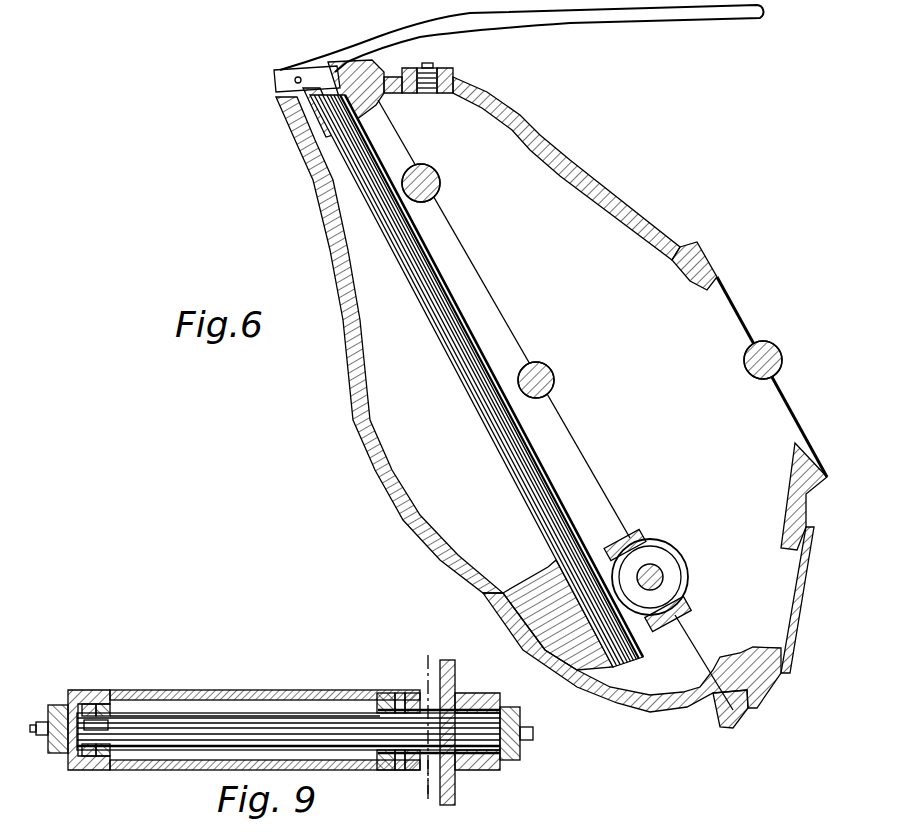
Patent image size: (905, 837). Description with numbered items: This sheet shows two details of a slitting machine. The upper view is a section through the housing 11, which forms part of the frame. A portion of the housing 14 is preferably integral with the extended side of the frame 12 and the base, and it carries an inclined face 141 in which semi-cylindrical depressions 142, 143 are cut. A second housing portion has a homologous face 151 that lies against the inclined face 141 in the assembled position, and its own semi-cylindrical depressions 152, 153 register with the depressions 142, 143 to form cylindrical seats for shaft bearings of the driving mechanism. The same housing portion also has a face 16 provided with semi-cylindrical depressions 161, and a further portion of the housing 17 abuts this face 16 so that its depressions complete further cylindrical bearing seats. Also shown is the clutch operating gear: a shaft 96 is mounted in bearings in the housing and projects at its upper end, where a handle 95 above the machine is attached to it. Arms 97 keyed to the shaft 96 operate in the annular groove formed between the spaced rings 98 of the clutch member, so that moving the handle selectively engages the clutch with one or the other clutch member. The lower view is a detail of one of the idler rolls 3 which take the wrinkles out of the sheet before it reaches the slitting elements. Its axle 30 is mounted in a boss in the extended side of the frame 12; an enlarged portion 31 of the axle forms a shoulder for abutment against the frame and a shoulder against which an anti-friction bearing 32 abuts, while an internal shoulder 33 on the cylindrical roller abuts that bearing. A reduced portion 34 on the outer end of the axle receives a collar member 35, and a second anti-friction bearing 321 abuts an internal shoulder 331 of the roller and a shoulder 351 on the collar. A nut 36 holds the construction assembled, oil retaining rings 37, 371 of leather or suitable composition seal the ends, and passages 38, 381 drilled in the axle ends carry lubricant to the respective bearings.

In FIG. 6, the handle 95 is at (607, 15).
In FIG. 6, the inclined face 141 is at (350, 78).
In FIG. 6, the face on portion 15 151 is at (381, 98).
In FIG. 6, the portion of the housing 14 is at (387, 382).
In FIG. 6, the housing 11 is at (553, 197).
In FIG. 6, the semi-cylindrical depression 142 is at (455, 184).
In FIG. 6, the semi-cylindrical depression 152 is at (440, 192).
In FIG. 6, the semi-cylindrical depression 143 is at (571, 366).
In FIG. 6, the semi-cylindrical depression 153 is at (554, 386).
In FIG. 6, the portion of the housing 17 is at (647, 270).
In FIG. 6, the face on housing 15 16 is at (718, 276).
In FIG. 6, the semi-cylindrical depressions 161 is at (777, 350).
In FIG. 6, the shaft 96 is at (520, 492).
In FIG. 6, the arms 97 is at (633, 534).
In FIG. 6, the rings of the clutch member 98 is at (686, 567).
In FIG. 9, the idler rolls 3 is at (270, 690).
In FIG. 9, the axle 30 is at (307, 725).
In FIG. 9, the reduced portion 34 is at (130, 712).
In FIG. 9, the oil retaining ring 37 is at (80, 690).
In FIG. 9, the nut 36 is at (58, 705).
In FIG. 9, the collar member 35 is at (92, 710).
In FIG. 9, the passage 381 is at (90, 756).
In FIG. 9, the internal shoulder 331 is at (110, 715).
In FIG. 9, the anti-friction bearing 321 is at (103, 756).
In FIG. 9, the shoulder 351 is at (103, 712).
In FIG. 9, the internal shoulder 33 is at (385, 700).
In FIG. 9, the anti-friction bearing 32 is at (395, 705).
In FIG. 9, the oil retaining ring 371 is at (410, 700).
In FIG. 9, the enlarged portion 31 is at (427, 711).
In FIG. 9, the passage 38 is at (428, 796).
In FIG. 9, the side of the frame 12 is at (484, 702).